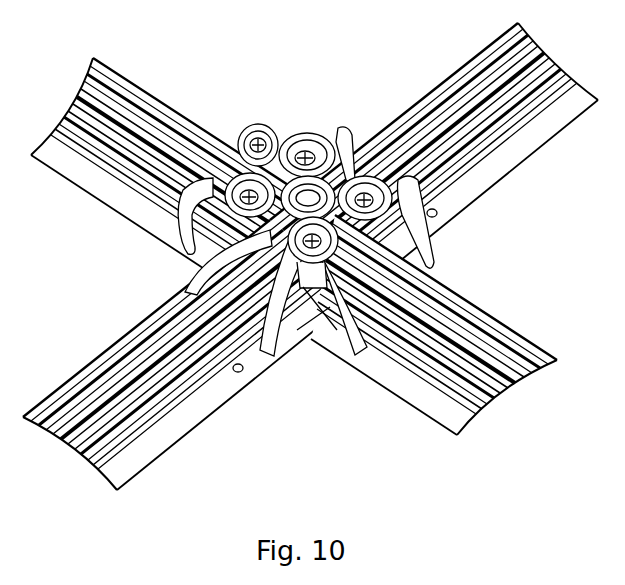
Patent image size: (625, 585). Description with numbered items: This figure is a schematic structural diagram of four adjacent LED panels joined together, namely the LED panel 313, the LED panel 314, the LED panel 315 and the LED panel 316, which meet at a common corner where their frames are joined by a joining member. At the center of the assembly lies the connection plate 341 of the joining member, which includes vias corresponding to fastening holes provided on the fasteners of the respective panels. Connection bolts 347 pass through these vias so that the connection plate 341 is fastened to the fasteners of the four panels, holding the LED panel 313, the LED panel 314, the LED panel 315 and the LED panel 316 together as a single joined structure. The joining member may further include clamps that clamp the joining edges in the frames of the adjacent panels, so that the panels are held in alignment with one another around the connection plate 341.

The LED panel 313 is at (489, 170).
The LED panel 314 is at (400, 375).
The LED panel 315 is at (100, 180).
The LED panel 316 is at (380, 130).
The connection plate 341 is at (302, 132).
The connection bolt 347 is at (238, 185).